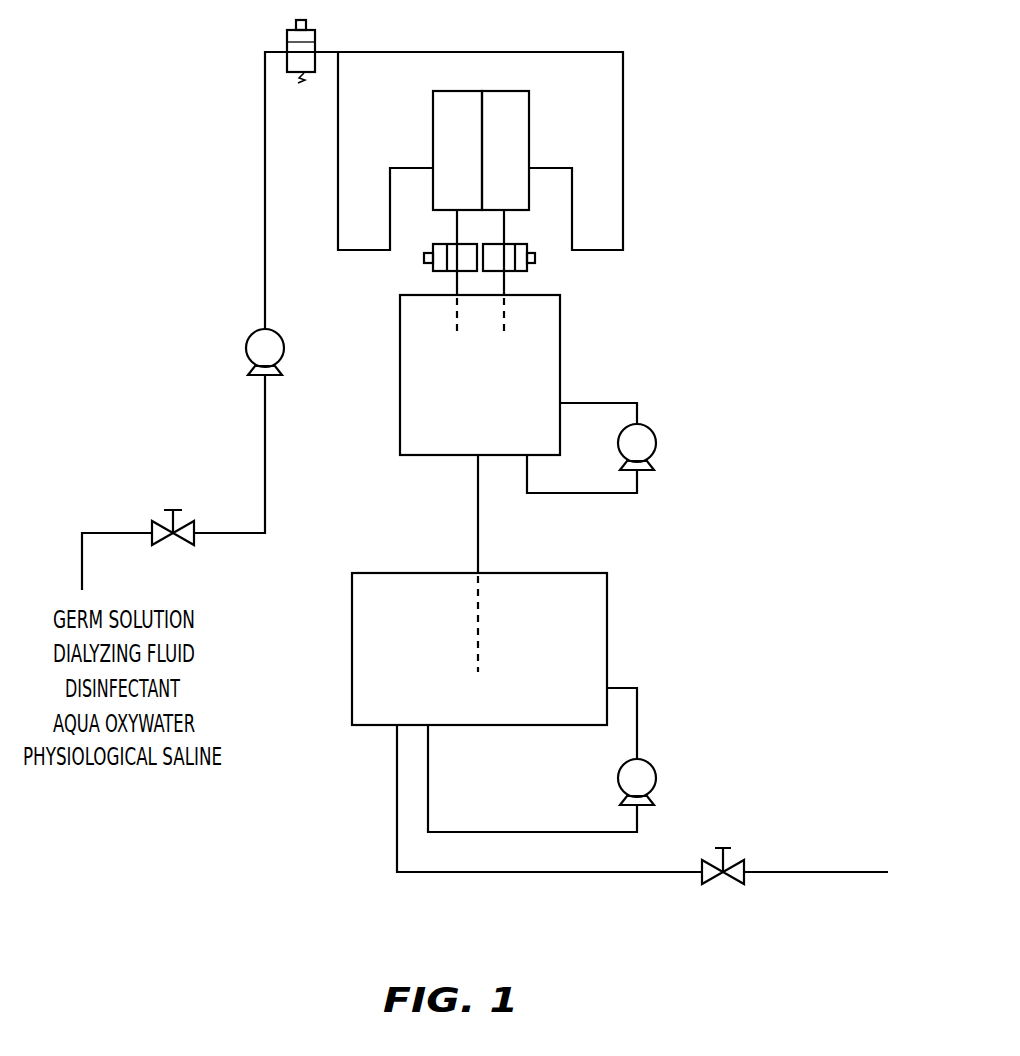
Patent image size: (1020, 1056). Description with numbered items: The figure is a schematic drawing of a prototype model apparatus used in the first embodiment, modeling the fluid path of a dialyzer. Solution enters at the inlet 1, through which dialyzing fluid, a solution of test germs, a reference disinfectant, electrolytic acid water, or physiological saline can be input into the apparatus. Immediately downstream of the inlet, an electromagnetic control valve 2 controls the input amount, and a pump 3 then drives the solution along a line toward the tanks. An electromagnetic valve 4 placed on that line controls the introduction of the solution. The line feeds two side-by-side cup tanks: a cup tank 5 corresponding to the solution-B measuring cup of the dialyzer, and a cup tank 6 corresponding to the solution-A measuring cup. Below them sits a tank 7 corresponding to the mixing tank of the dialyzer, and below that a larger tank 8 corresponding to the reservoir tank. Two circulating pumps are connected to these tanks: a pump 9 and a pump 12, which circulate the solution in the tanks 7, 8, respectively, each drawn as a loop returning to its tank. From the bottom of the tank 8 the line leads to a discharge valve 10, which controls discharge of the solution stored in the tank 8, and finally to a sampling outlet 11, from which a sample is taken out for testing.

The inlet 1 is at (80, 547).
The electromagnetic control valve 2 is at (197, 530).
The pump 3 is at (284, 347).
The electromagnetic valve 4 is at (315, 38).
The cup tank 5 is at (433, 104).
The cup tank 6 is at (529, 105).
The tank 7 is at (560, 320).
The tank 8 is at (607, 608).
The pump 9 is at (655, 776).
The discharge valve 10 is at (738, 884).
The sampling outlet 11 is at (862, 870).
The pump 12 is at (657, 443).